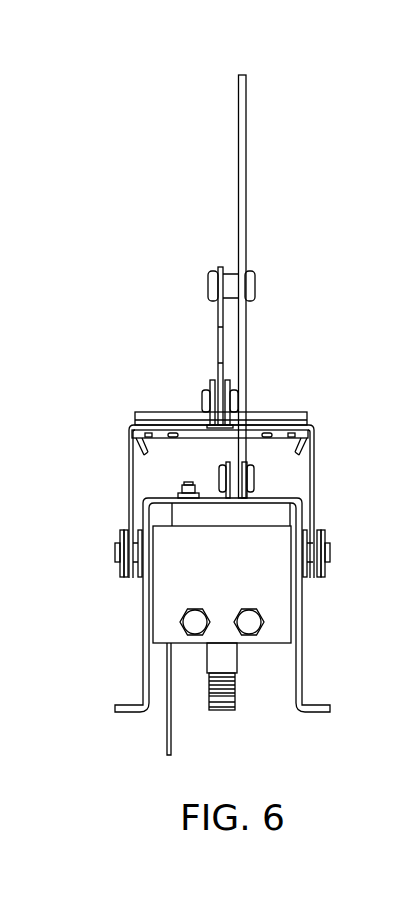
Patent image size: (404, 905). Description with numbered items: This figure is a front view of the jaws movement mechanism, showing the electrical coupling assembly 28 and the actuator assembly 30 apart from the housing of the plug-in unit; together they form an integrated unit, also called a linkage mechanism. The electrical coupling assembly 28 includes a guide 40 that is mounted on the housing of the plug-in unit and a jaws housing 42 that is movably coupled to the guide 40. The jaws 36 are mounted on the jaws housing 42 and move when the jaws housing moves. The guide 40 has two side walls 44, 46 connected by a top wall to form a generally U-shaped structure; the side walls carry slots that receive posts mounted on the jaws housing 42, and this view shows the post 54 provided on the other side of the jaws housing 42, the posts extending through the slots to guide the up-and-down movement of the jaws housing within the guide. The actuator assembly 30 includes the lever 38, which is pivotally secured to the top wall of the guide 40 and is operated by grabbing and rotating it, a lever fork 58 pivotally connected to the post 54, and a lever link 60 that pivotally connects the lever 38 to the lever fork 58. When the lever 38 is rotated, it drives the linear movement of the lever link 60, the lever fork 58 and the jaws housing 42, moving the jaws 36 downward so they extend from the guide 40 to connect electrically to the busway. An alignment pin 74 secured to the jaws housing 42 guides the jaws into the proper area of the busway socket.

The electrical coupling assembly 28 is at (248, 725).
The actuator assembly 30 is at (218, 178).
The jaws 36 is at (225, 713).
The lever 38 is at (247, 143).
The guide 40 is at (303, 692).
The jaws housing 42 is at (180, 600).
The side wall 44 is at (142, 672).
The side wall 46 is at (303, 638).
The post 54 is at (117, 552).
The lever fork 58 is at (316, 452).
The lever link 60 is at (217, 312).
The alignment pin 74 is at (166, 723).